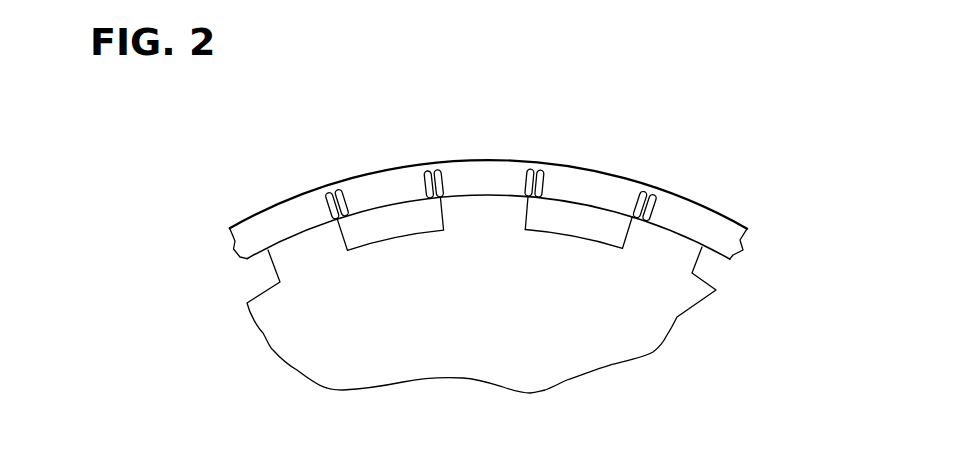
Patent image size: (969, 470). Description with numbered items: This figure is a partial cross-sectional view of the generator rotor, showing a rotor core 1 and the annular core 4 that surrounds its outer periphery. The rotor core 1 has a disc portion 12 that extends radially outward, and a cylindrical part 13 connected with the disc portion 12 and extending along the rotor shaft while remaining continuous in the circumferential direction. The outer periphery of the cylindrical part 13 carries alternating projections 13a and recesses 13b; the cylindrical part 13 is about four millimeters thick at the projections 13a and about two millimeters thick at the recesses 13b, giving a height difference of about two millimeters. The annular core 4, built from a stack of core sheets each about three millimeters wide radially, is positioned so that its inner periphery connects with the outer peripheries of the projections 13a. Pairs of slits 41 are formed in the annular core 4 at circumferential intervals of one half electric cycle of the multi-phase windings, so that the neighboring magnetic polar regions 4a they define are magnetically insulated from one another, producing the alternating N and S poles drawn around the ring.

The rotor core 1 is at (481, 348).
The disc portion 12 is at (533, 333).
The cylindrical part 13 is at (617, 323).
The projection 13a is at (678, 253).
The recess 13b is at (572, 238).
The annular core 4 is at (488, 218).
The magnetic polar region 4a is at (397, 182).
The slit 41 is at (328, 188).